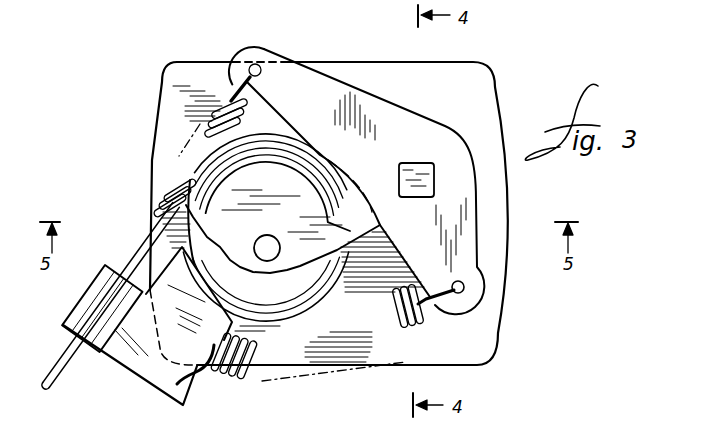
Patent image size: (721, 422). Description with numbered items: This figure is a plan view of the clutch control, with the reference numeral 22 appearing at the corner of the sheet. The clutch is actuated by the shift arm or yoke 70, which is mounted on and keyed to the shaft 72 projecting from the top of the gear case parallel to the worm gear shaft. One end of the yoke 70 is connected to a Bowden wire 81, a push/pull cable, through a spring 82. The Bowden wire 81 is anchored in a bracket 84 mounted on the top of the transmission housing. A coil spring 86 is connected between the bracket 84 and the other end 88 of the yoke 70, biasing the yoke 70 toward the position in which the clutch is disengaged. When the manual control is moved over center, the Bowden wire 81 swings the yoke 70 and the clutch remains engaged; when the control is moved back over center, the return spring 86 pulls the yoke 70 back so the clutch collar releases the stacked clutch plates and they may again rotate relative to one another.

The housing 22 is at (430, 242).
The shift arm or yoke 70 is at (387, 109).
The shaft 72 is at (422, 163).
The Bowden wire 81 is at (158, 230).
The spring 82 is at (158, 190).
The bracket 84 is at (127, 353).
The coil spring 86 is at (242, 380).
The other end of yoke 88 is at (477, 283).